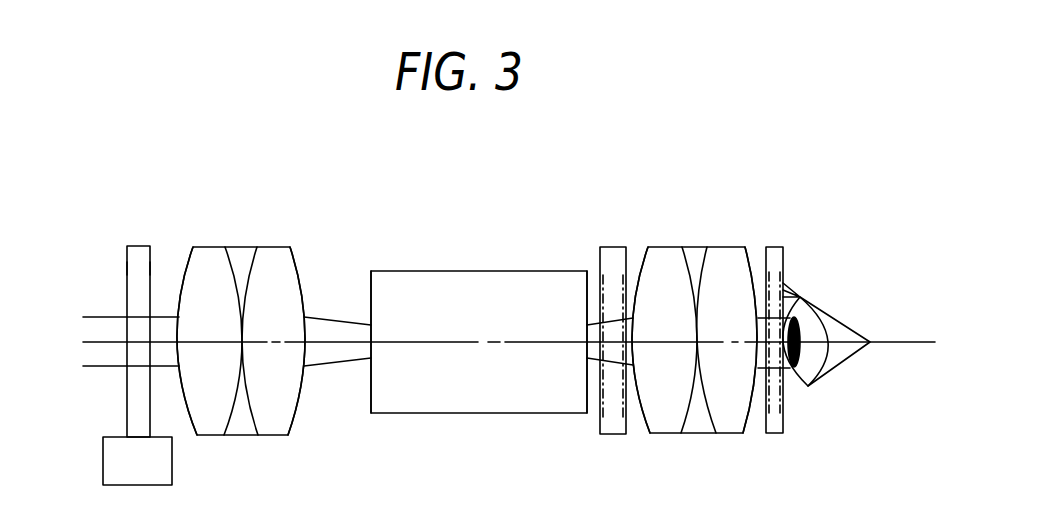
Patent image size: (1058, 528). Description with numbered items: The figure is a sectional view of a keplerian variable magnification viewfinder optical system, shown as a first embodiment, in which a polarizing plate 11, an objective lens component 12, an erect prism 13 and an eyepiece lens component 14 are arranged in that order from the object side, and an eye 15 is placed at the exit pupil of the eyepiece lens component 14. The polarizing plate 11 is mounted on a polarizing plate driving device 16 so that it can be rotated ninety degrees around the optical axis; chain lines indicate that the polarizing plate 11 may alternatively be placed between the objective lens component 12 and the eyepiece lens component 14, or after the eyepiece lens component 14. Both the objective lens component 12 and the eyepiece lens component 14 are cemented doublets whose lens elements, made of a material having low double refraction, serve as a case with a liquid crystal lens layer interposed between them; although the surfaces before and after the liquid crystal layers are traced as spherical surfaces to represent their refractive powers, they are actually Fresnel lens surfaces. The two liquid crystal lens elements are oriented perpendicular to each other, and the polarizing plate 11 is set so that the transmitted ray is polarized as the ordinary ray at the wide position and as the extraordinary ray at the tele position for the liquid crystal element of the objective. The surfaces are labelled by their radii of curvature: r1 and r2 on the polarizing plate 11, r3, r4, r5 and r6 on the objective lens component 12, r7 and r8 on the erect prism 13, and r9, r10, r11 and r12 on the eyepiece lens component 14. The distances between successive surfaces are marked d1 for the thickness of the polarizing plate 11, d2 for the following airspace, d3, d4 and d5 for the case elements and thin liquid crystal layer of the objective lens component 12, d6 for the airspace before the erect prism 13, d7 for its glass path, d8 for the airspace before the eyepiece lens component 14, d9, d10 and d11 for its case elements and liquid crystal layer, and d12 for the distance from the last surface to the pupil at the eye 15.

The polarizing plate 11 is at (138, 246).
The objective lens component 12 is at (267, 311).
The erect prism 13 is at (438, 270).
The eyepiece lens component 14 is at (724, 311).
The eye 15 is at (801, 296).
The polarizing plate driving device 16 is at (103, 452).
The radius of curvature of surface one r1 is at (127, 266).
The radius of curvature of surface two r2 is at (150, 266).
The radius of curvature of surface three r3 is at (184, 270).
The radius of curvature of surface four r4 is at (231, 266).
The radius of curvature of surface five r5 is at (264, 266).
The radius of curvature of surface six r6 is at (304, 314).
The radius of curvature of surface seven r7 is at (371, 284).
The radius of curvature of surface eight r8 is at (587, 274).
The radius of curvature of surface nine r9 is at (640, 266).
The radius of curvature of surface ten r10 is at (682, 266).
The radius of curvature of surface eleven r11 is at (708, 266).
The radius of curvature of surface twelve r12 is at (757, 313).
The thickness of polarizing plate d1 is at (138, 342).
The airspace after polarizing plate d2 is at (168, 344).
The thickness of first objective lens element d3 is at (213, 343).
The thickness of objective liquid crystal layer d4 is at (233, 343).
The thickness of second objective lens element d5 is at (292, 343).
The airspace between objective and prism d6 is at (333, 343).
The thickness of erect prism d7 is at (470, 343).
The airspace between prism and eyepiece d8 is at (618, 352).
The thickness of first eyepiece lens element d9 is at (667, 343).
The thickness of eyepiece liquid crystal layer d10 is at (690, 343).
The thickness of second eyepiece lens element d11 is at (722, 343).
The eye relief distance d12 is at (783, 372).